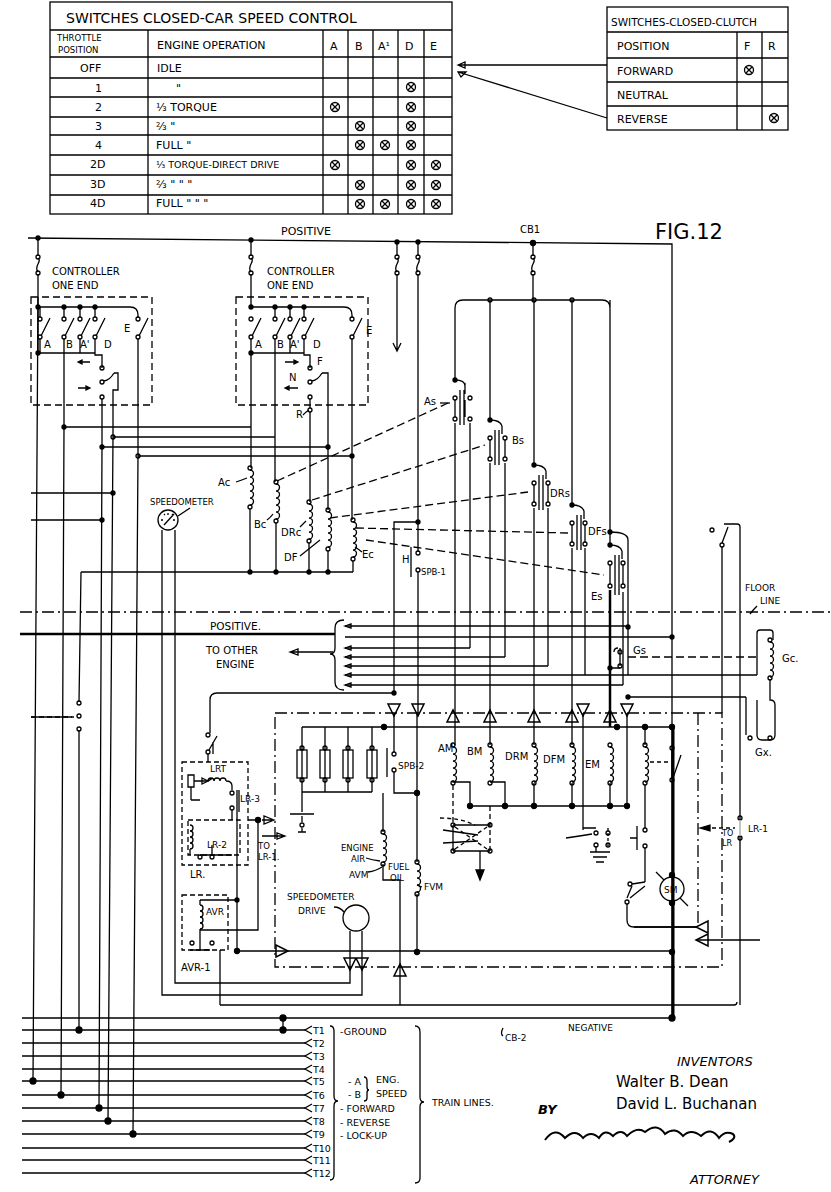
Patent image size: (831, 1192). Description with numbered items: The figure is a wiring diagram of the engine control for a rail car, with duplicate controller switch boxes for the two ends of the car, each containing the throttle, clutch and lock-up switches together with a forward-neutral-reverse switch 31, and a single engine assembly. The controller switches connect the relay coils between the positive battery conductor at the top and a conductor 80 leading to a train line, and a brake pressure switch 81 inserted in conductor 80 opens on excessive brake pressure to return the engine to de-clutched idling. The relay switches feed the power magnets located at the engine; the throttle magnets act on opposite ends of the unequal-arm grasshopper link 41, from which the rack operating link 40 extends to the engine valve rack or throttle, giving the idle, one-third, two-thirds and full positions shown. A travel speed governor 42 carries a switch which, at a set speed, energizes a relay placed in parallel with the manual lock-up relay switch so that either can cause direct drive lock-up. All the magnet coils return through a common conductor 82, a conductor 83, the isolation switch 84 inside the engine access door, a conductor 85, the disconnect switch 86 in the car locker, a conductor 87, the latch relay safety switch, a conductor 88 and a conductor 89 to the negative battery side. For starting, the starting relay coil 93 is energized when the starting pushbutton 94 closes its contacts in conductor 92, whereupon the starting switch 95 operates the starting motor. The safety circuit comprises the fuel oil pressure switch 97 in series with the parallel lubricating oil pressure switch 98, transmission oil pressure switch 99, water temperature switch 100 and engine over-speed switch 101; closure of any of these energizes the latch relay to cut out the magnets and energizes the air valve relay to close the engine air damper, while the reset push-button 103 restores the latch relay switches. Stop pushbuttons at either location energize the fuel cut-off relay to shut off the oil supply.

The reversing switch 31 is at (110, 378).
The rack operating link 40 is at (484, 874).
The grasshopper link 41 is at (472, 852).
The speed governor 42 is at (608, 830).
The conductor 80 is at (217, 578).
The brake pressure switch 81 is at (80, 702).
The common conductor 82 is at (493, 810).
The conductor 83 is at (628, 884).
The isolation switch 84 is at (625, 900).
The conductor 85 is at (652, 930).
The disconnect switch 86 is at (711, 540).
The conductor 87 is at (741, 534).
The conductor 88 is at (484, 1008).
The conductor 89 is at (440, 952).
The conductor 92 is at (650, 806).
The starting relay coil 93 is at (646, 753).
The starting pushbutton 94 is at (647, 838).
The starting switch 95 is at (676, 768).
The fuel oil pressure switch 97 is at (309, 821).
The lubricating oil pressure switch 98 is at (298, 752).
The transmission oil pressure switch 99 is at (323, 753).
The water temperature switch 100 is at (349, 753).
The engine over-speed switch 101 is at (373, 753).
The reset push-button 103 is at (214, 738).